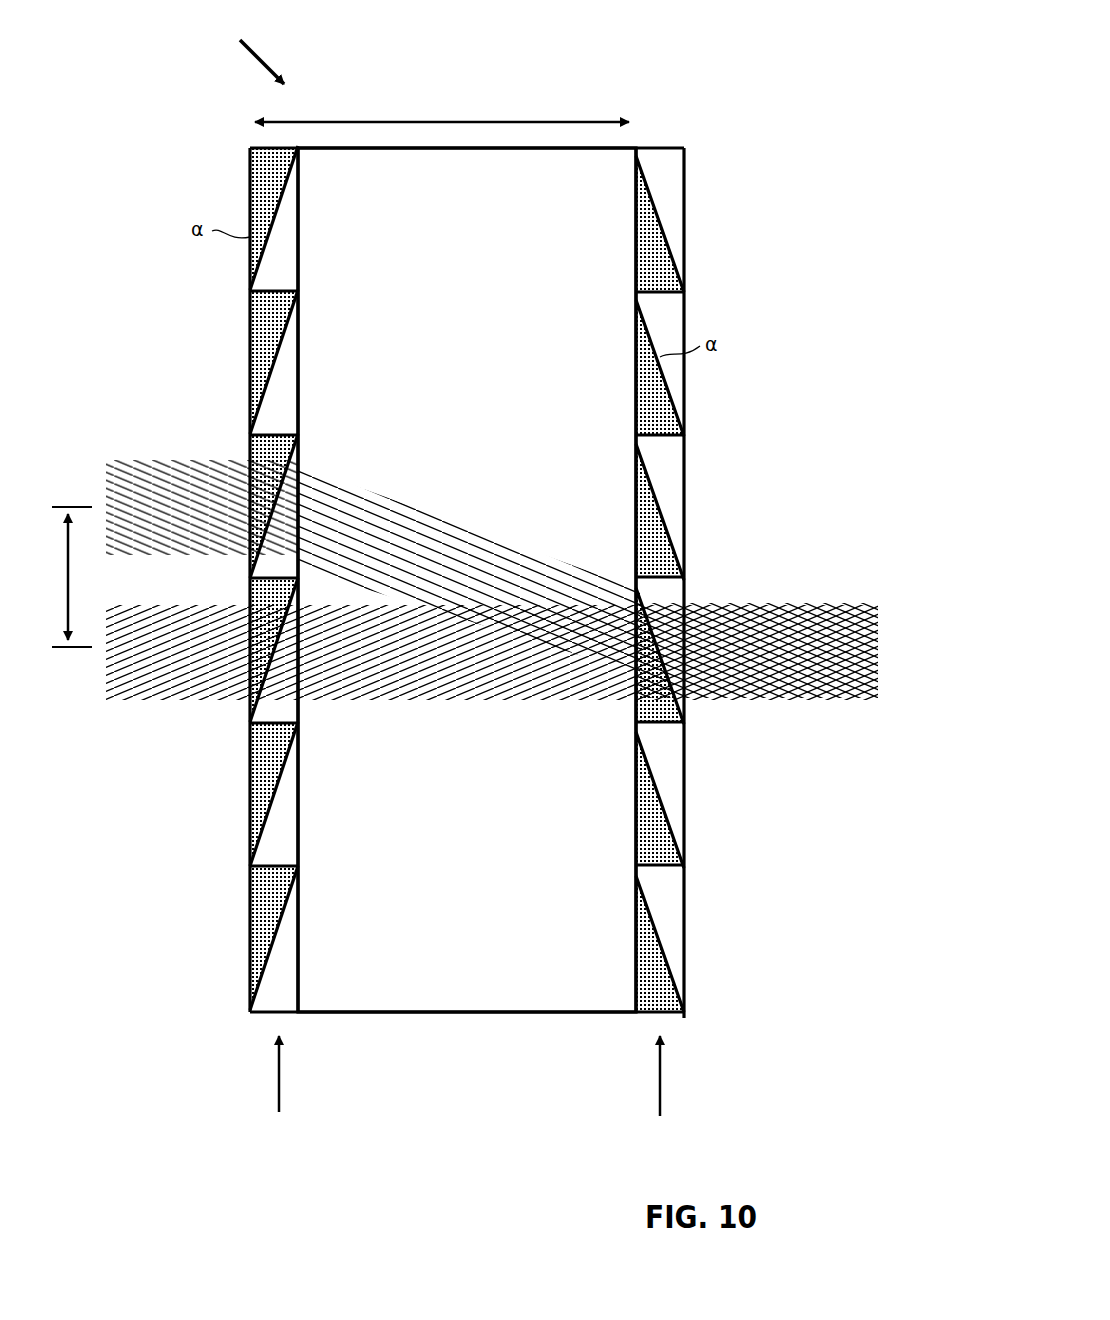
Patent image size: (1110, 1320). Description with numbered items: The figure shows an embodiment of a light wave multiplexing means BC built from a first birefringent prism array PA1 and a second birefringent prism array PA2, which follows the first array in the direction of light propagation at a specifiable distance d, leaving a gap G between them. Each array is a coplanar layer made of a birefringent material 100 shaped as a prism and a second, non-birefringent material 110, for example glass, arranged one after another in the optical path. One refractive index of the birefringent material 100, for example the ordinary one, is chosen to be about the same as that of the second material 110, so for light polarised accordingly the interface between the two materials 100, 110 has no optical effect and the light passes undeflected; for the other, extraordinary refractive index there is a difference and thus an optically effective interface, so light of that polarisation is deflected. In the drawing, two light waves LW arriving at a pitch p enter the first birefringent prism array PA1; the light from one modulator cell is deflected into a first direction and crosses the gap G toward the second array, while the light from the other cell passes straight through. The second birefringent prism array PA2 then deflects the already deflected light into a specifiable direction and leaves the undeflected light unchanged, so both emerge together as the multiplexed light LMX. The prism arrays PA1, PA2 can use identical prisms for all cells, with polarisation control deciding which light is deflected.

The birefringent material 100 is at (250, 340).
The second, non-birefringent material 110 is at (293, 241).
The light wave LW is at (160, 463).
The multiplexed light wave LMX is at (816, 680).
The gap G is at (571, 957).
The light wave multiplexing means BC is at (253, 50).
The first birefringent prism array PA1 is at (282, 1094).
The second birefringent prism array PA2 is at (662, 1094).
The distance d is at (442, 108).
The pitch p is at (60, 577).